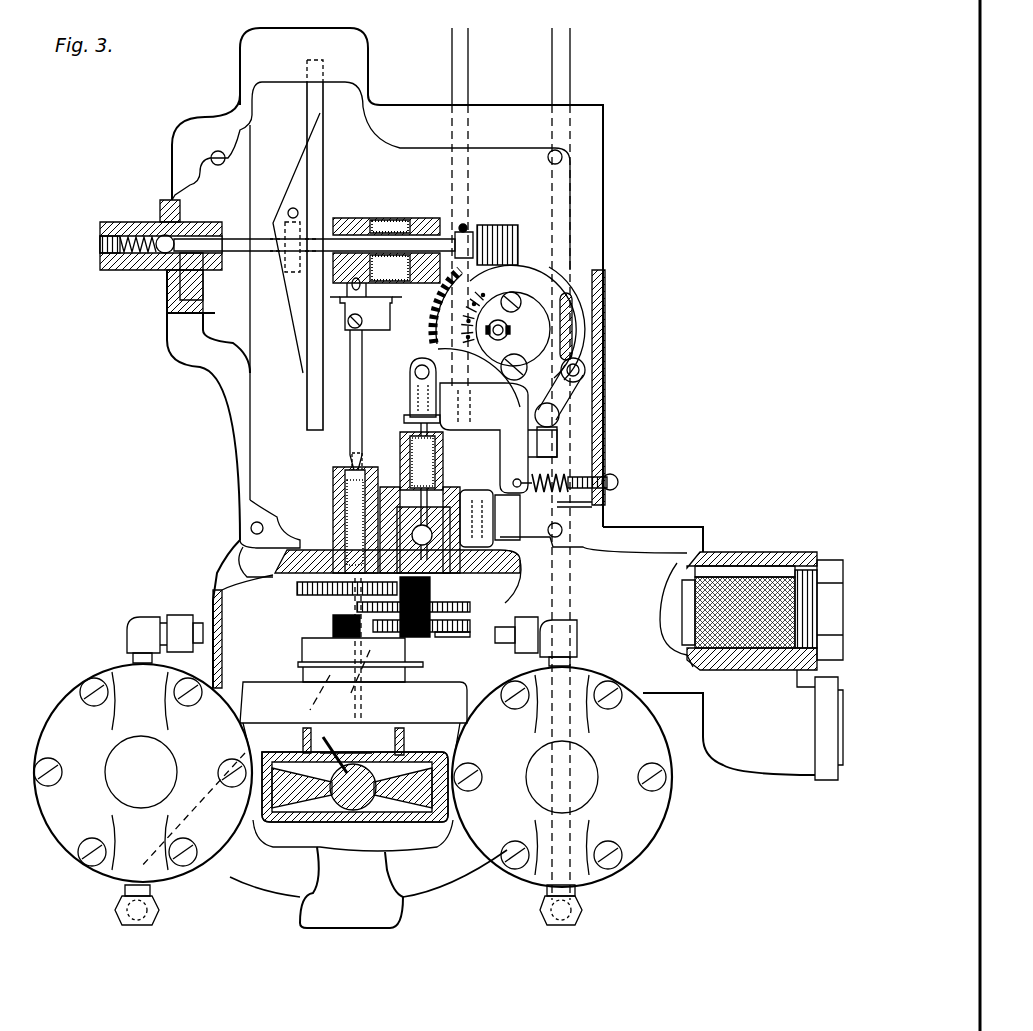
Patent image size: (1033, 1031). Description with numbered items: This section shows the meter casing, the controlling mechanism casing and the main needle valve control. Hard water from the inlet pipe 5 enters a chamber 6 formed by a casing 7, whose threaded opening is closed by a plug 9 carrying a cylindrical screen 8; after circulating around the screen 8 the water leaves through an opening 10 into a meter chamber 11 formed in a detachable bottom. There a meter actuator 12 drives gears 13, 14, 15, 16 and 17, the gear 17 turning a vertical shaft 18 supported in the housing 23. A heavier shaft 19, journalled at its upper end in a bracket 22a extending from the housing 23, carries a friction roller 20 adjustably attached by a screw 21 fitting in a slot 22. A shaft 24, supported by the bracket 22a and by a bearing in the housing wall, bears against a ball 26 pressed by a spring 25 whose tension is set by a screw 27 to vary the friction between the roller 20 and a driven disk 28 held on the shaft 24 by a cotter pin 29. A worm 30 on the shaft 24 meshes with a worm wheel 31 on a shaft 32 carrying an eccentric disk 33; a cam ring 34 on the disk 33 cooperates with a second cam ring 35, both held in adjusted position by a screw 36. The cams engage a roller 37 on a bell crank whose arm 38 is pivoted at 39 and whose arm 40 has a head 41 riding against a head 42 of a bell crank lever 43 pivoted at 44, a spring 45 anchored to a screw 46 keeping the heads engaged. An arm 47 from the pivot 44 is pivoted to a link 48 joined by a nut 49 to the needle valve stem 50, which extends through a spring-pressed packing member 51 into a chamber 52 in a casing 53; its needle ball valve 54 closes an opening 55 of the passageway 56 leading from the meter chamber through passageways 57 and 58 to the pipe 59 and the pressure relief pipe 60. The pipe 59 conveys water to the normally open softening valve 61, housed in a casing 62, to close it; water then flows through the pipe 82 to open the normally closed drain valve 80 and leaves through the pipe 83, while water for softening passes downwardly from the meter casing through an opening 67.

The hard water inlet pipe 5 is at (832, 765).
The chamber 6 is at (750, 568).
The casing 7 is at (780, 556).
The cylindrical screen 8 is at (730, 580).
The plug 9 is at (813, 556).
The opening 10 is at (678, 590).
The meter chamber 11 is at (468, 700).
The meter actuator 12 is at (297, 820).
The gear 13 is at (333, 625).
The gear 14 is at (465, 632).
The gear 15 is at (490, 612).
The gear 16 is at (430, 588).
The gear 17 is at (300, 590).
The vertical shaft 18 is at (333, 490).
The shaft 19 is at (370, 338).
The friction roller 20 is at (388, 312).
The screw 21 is at (366, 326).
The slot 22 is at (363, 388).
The bracket 22a is at (382, 232).
The housing 23 is at (428, 142).
The shaft 24 is at (352, 243).
The spring 25 is at (135, 236).
The ball 26 is at (165, 235).
The screw 27 is at (100, 245).
The driven disk 28 is at (323, 180).
The cotter pin 29 is at (290, 210).
The worm 30 is at (490, 240).
The worm wheel 31 is at (440, 300).
The shaft 32 is at (509, 330).
The eccentric disk 33 is at (530, 290).
The cam ring 34 is at (523, 272).
The cam ring 35 is at (569, 323).
The screw 36 is at (485, 306).
The follower or roller 37 is at (590, 350).
The arm 38 is at (586, 373).
The pivot 39 is at (575, 410).
The arm 40 is at (560, 430).
The head 41 is at (560, 452).
The head 42 is at (530, 447).
The bell crank lever 43 is at (500, 420).
The pivot 44 is at (503, 372).
The spring 45 is at (560, 475).
The screw 46 is at (612, 478).
The arm 47 is at (455, 385).
The link 48 is at (408, 392).
The nut 49 is at (404, 418).
The needle valve stem 50 is at (420, 428).
The spring-pressed packing member 51 is at (447, 470).
The chamber 52 is at (443, 500).
The casing 53 is at (462, 497).
The needle ball valve 54 is at (476, 518).
The opening 55 is at (500, 553).
The passageway 56 is at (549, 561).
The passageway 57 is at (392, 480).
The passageway 58 is at (490, 517).
The pipe 59 is at (160, 905).
The pressure relief pipe 60 is at (468, 80).
The softening valve 61 is at (65, 862).
The casing 62 is at (262, 872).
The opening 67 is at (393, 912).
The drain valve 80 is at (648, 840).
The pipe 82 is at (180, 617).
The pipe 83 is at (570, 66).